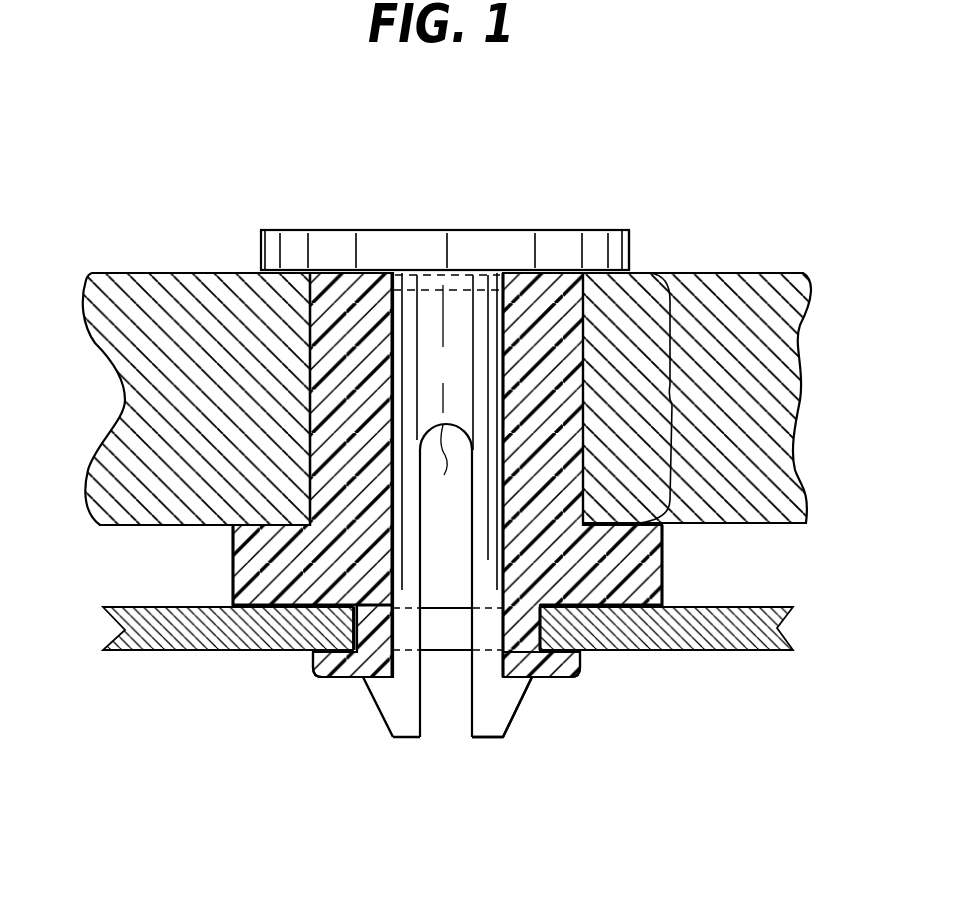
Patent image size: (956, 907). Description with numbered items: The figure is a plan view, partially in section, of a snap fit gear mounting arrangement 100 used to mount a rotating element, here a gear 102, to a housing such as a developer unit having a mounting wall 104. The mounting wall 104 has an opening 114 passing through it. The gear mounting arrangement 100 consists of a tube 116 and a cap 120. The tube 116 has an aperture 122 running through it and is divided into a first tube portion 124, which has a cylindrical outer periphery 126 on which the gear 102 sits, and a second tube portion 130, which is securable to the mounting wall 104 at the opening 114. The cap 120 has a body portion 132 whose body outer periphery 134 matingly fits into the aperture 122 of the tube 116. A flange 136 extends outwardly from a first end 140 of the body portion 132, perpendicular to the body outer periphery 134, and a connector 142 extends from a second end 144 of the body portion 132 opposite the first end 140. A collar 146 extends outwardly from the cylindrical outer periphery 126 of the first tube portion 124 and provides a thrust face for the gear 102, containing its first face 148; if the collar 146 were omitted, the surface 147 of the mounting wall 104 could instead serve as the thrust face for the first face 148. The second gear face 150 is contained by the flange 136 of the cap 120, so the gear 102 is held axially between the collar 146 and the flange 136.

The snap fit gear mounting arrangement 100 is at (585, 117).
The gear 102 is at (797, 374).
The mounting wall 104 is at (703, 637).
The opening 114 is at (460, 543).
The tube 116 is at (561, 445).
The cap 120 is at (261, 249).
The aperture 122 is at (477, 245).
The first tube portion 124 is at (675, 400).
The cylindrical outer periphery 126 is at (312, 455).
The second tube portion 130 is at (550, 668).
The body portion 132 is at (462, 380).
The body outer periphery 134 is at (408, 390).
The flange 136 is at (598, 232).
The first end 140 is at (432, 270).
The connector 142 is at (514, 726).
The second end 144 is at (445, 506).
The collar 146 is at (233, 570).
The surface 147 is at (760, 607).
The first face 148 is at (710, 527).
The second gear face 150 is at (708, 274).